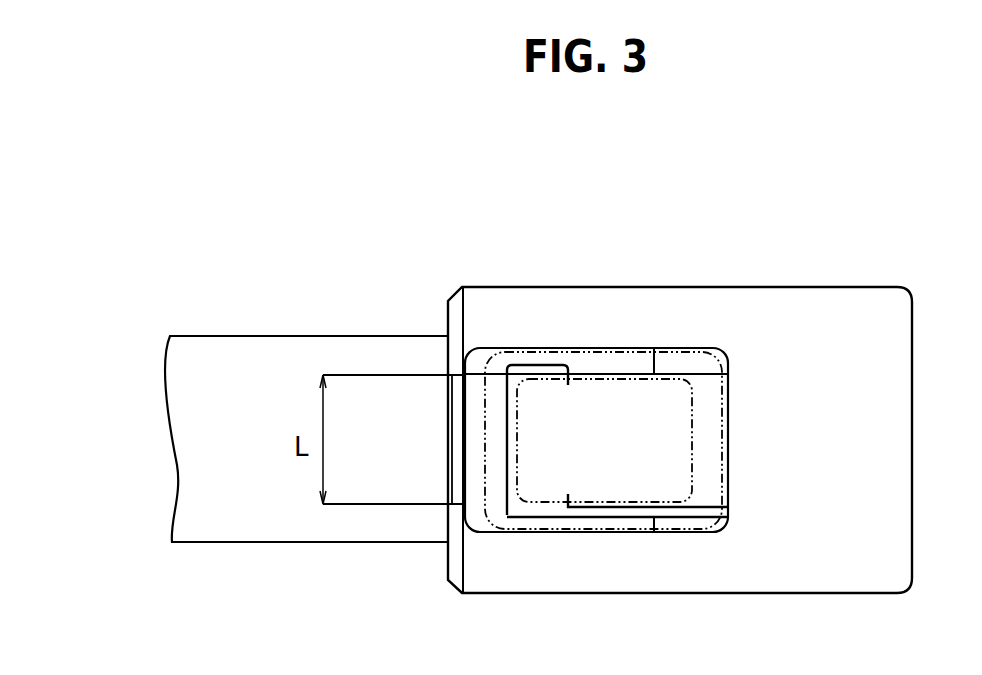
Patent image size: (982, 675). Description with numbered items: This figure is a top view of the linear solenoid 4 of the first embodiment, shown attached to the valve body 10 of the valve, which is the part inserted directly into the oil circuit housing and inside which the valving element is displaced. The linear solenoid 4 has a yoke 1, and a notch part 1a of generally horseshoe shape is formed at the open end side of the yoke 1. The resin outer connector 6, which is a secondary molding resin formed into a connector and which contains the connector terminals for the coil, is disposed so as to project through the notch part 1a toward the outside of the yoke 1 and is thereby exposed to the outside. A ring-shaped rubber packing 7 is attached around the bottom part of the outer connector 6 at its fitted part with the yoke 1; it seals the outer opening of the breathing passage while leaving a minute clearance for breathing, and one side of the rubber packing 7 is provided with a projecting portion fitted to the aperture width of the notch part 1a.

The yoke 1 is at (785, 298).
The notch part 1a is at (452, 498).
The linear solenoid 4 is at (896, 269).
The outer connector 6 is at (730, 470).
The rubber packing 7 is at (732, 353).
The valve body 10 is at (364, 336).